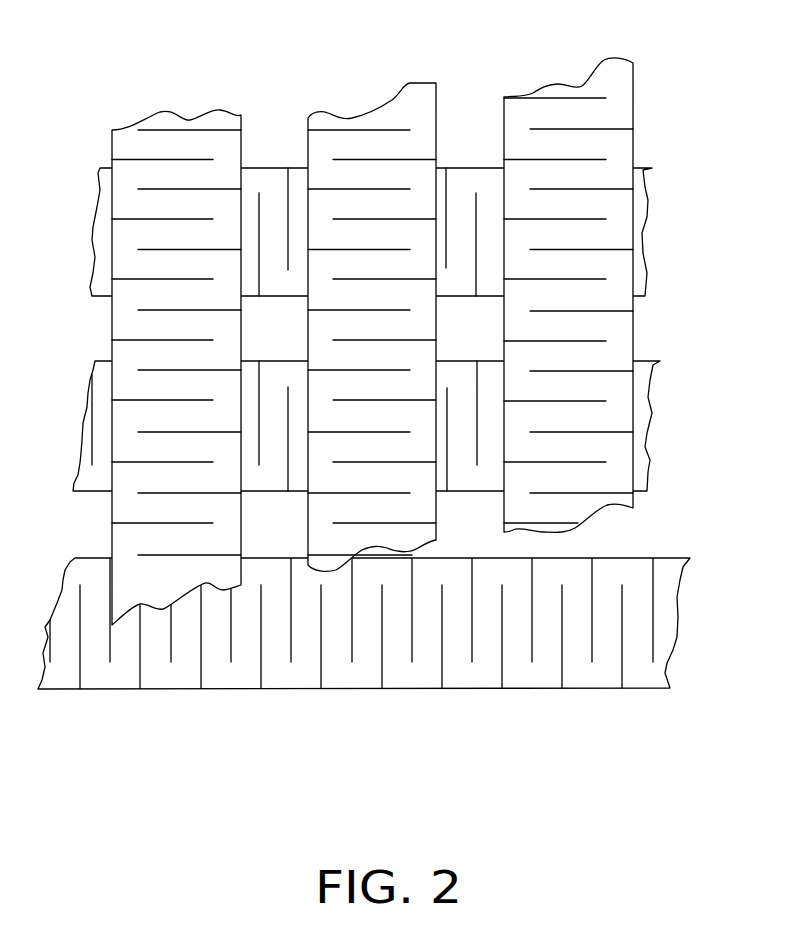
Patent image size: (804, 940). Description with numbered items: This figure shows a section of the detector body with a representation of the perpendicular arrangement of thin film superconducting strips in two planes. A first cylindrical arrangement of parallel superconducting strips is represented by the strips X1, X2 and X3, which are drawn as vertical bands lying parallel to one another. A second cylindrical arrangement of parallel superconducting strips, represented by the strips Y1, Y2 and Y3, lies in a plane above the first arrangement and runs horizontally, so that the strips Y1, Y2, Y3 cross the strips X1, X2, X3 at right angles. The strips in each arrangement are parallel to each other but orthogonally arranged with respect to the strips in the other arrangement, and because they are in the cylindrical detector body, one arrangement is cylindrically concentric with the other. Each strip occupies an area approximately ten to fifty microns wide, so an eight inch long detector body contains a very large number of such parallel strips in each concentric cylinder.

The superconducting strip X1 is at (241, 145).
The superconducting strip X2 is at (436, 110).
The superconducting strip X3 is at (633, 95).
The superconducting strip Y1 is at (665, 557).
The superconducting strip Y2 is at (648, 360).
The superconducting strip Y3 is at (643, 167).